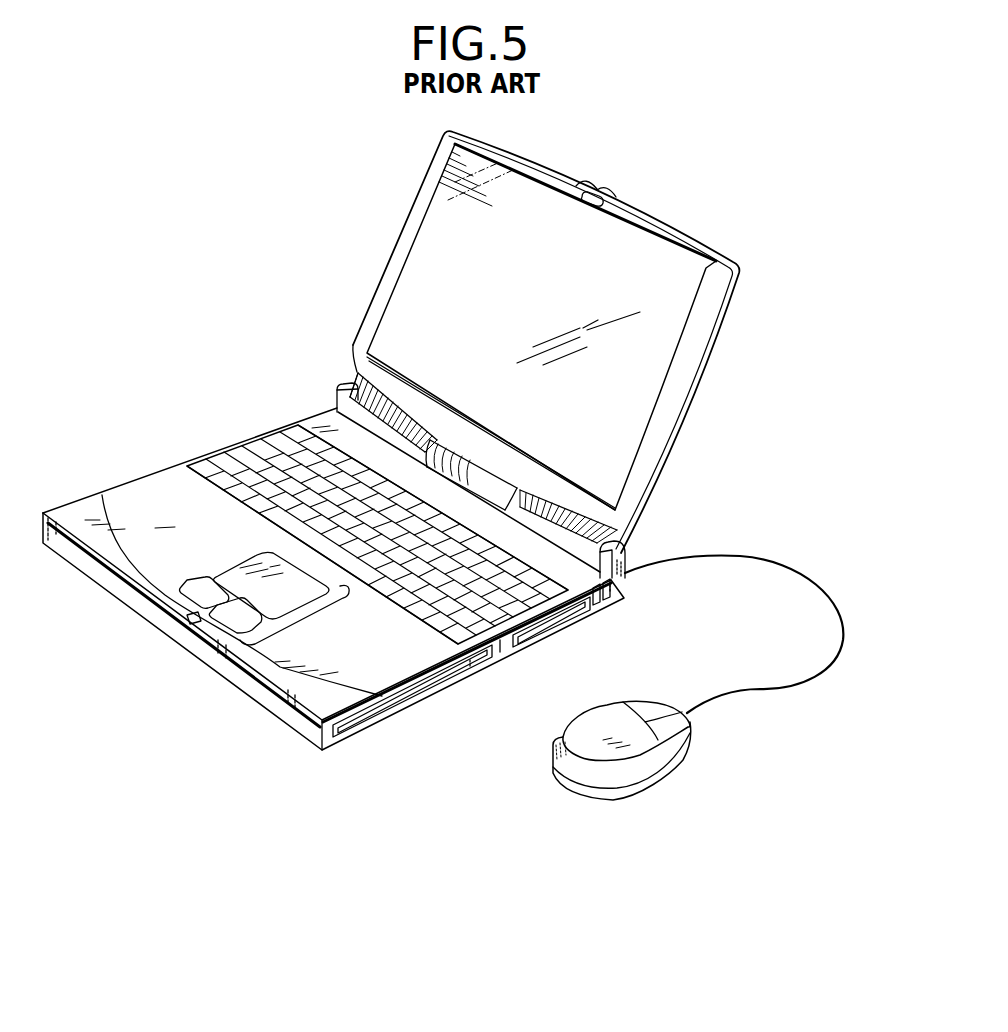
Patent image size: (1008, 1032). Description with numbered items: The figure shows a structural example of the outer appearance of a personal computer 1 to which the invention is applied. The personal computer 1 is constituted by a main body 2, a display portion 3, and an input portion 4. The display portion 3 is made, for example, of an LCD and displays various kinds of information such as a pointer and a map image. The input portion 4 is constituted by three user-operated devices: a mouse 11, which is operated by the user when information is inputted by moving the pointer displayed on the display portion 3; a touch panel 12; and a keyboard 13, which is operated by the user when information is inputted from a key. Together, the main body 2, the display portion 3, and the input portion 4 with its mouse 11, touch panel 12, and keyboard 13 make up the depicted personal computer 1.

The personal computer 1 is at (606, 910).
The main body 2 is at (170, 467).
The display portion 3 is at (460, 288).
The input portion 4 is at (858, 635).
The mouse 11 is at (665, 777).
The touch panel 12 is at (303, 623).
The keyboard 13 is at (500, 603).